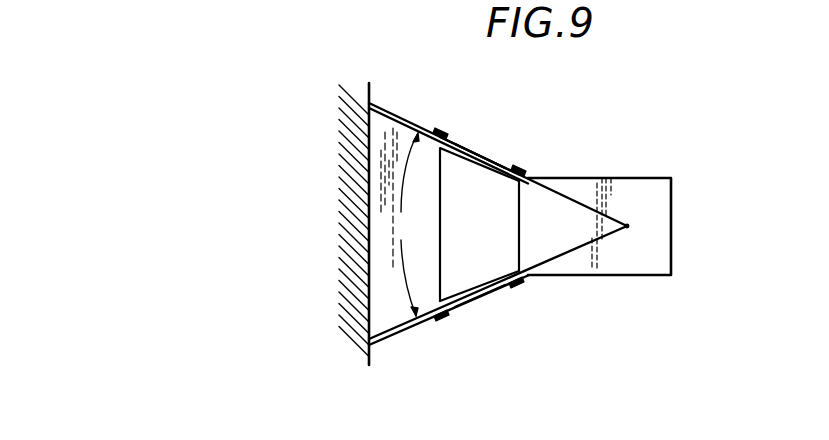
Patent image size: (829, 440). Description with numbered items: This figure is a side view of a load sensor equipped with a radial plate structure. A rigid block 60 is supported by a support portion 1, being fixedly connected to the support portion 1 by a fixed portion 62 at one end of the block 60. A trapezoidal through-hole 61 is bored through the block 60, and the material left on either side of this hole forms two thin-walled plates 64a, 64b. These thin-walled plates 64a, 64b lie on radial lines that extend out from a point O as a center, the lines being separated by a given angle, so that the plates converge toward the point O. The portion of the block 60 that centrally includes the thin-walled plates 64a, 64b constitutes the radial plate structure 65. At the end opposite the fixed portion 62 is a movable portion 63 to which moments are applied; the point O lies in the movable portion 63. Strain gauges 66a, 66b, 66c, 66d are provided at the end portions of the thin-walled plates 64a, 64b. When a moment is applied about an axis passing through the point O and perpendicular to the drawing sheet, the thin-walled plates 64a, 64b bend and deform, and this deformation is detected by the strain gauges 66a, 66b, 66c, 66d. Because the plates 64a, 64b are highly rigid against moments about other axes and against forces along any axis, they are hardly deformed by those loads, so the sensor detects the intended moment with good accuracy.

The support portion 1 is at (352, 164).
The rigid block 60 is at (406, 120).
The trapezoidal through-hole 61 is at (520, 193).
The fixed portion 62 is at (397, 306).
The movable portion 63 is at (648, 210).
The thin-walled plate 64a is at (492, 161).
The thin-walled plate 64b is at (480, 296).
The radial plate structure 65 is at (547, 101).
The strain gauge 66a is at (447, 135).
The strain gauge 66b is at (525, 170).
The strain gauge 66c is at (438, 321).
The strain gauge 66d is at (518, 288).
The point O is at (627, 229).